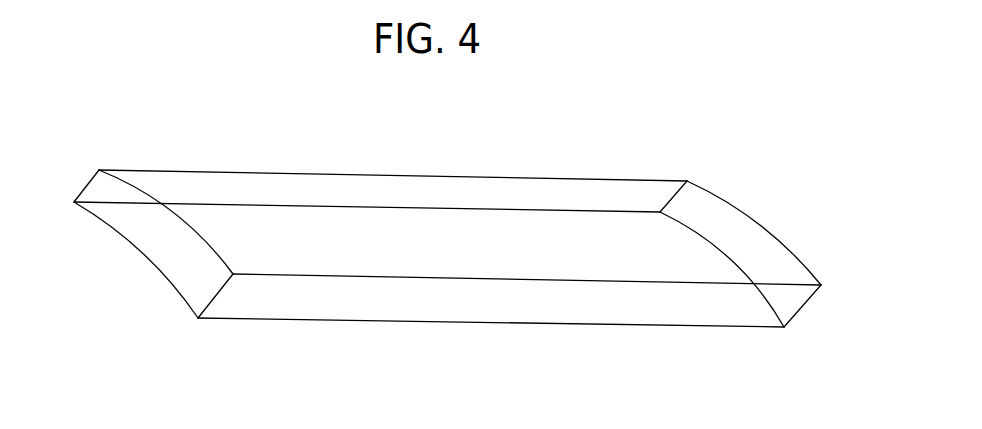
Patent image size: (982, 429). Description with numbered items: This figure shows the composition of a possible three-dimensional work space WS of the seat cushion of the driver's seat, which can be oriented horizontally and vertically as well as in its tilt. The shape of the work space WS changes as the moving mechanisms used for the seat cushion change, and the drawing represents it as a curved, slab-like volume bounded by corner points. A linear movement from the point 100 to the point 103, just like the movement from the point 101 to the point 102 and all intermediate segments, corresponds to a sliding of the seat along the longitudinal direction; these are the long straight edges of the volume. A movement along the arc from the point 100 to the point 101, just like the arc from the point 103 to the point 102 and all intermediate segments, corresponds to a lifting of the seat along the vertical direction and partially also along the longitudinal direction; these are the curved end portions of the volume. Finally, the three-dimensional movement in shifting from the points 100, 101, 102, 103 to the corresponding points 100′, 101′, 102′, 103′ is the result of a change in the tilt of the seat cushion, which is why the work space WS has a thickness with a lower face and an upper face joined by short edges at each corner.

The work space WS is at (702, 345).
The point 100 is at (802, 319).
The point 100′ is at (776, 239).
The point 101 is at (708, 269).
The point 101′ is at (689, 184).
The point 102 is at (116, 257).
The point 102′ is at (97, 172).
The point 103 is at (197, 307).
The point 103′ is at (185, 222).